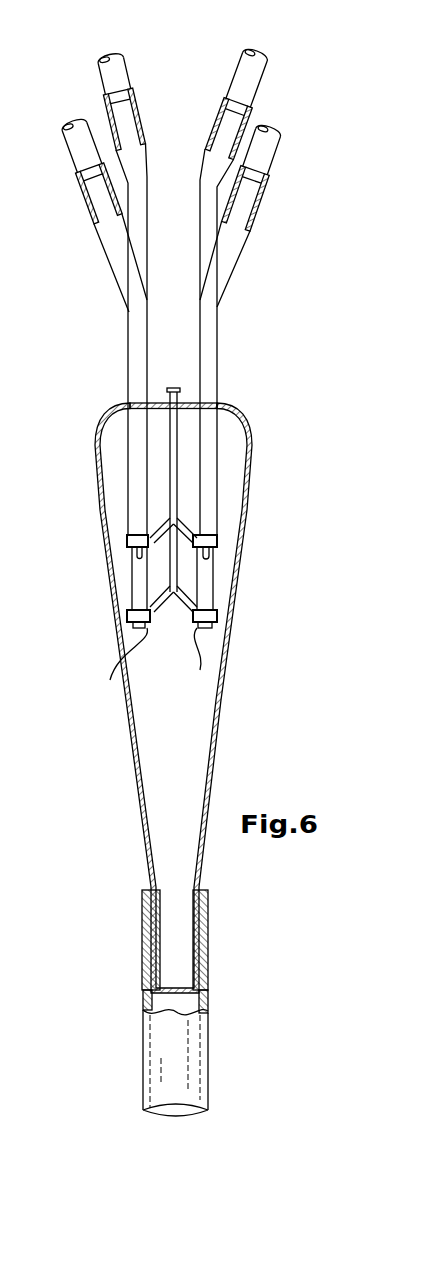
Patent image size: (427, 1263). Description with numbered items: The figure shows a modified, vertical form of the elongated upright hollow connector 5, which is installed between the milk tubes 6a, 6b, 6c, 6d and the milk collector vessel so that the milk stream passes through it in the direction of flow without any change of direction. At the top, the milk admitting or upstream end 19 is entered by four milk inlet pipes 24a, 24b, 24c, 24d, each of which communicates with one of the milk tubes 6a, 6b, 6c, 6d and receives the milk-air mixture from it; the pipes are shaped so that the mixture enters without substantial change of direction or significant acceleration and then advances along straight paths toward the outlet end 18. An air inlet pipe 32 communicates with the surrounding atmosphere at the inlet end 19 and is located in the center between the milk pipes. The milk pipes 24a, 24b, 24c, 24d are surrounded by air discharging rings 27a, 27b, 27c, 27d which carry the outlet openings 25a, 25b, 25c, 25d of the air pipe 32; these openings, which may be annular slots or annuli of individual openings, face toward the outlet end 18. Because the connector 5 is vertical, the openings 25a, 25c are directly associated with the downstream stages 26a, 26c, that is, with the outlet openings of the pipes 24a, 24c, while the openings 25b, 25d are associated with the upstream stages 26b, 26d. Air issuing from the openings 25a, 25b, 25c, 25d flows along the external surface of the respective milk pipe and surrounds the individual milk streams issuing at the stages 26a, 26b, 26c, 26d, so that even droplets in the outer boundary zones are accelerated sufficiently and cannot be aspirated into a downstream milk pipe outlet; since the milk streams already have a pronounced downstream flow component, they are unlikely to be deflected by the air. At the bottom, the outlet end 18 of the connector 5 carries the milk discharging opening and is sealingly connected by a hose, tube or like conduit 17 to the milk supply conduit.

The milk tube 6a is at (273, 152).
The milk tube 6b is at (80, 145).
The milk tube 6c is at (255, 73).
The milk tube 6d is at (117, 73).
The milk inlet pipe 24a is at (227, 270).
The milk inlet pipe 24b is at (108, 235).
The milk inlet pipe 24c is at (207, 205).
The milk inlet pipe 24d is at (137, 187).
The milk admitting end 19 is at (152, 400).
The air inlet pipe 32 is at (173, 392).
The air discharging ring 27a is at (192, 664).
The air discharging ring 27b is at (118, 672).
The air discharging ring 27c is at (213, 532).
The air discharging ring 27d is at (132, 530).
The outlet opening 25a is at (217, 622).
The outlet opening 25b is at (133, 625).
The outlet opening 25c is at (218, 550).
The outlet opening 25d is at (132, 553).
The stage 26a is at (223, 633).
The stage 26b is at (133, 628).
The stage 26c is at (210, 558).
The stage 26d is at (138, 558).
The connector 5 is at (217, 733).
The outlet end 18 is at (205, 913).
The conduit 17 is at (193, 1037).